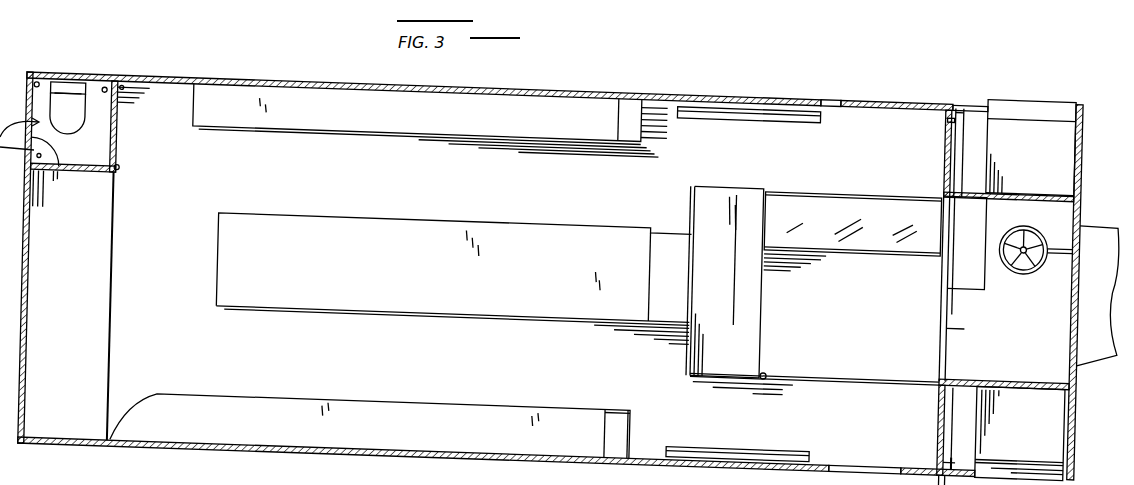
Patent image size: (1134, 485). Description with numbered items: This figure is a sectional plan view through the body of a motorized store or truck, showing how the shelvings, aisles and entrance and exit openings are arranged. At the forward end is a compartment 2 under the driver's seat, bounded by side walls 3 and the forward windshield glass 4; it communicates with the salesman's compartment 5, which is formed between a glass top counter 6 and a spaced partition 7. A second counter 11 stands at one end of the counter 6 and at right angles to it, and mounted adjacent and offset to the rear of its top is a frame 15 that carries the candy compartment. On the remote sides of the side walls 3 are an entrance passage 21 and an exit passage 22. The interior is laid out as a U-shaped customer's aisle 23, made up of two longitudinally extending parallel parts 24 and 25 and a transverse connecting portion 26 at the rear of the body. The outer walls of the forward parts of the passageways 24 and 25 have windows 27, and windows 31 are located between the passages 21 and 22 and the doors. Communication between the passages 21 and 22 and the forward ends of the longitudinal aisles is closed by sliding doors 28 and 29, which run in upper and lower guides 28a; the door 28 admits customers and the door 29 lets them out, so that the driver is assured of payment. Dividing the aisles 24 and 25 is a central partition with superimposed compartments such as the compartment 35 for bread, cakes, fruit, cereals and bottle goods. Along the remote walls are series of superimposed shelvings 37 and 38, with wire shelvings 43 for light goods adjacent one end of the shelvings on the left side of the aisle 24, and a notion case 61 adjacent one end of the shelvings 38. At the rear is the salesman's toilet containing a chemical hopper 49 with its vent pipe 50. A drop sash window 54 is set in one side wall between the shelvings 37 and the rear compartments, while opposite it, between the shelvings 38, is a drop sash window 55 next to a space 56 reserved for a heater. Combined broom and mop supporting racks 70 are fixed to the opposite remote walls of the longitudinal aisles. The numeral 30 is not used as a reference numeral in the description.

The compartment 2 is at (1036, 270).
The side walls 3 is at (1040, 206).
The forward windshield glass 4 is at (1078, 310).
The salesman's compartment 5 is at (851, 289).
The glass top counter 6 is at (826, 210).
The partition 7 is at (840, 378).
The second counter 11 is at (733, 316).
The frame 15 is at (672, 230).
The entrance passage 21 is at (1030, 433).
The exit passage 22 is at (1040, 130).
The U-shaped customer's aisle 23 is at (262, 362).
The longitudinally extending aisle 24 is at (439, 345).
The longitudinally extending aisle 25 is at (416, 164).
The transverse connecting portion 26 is at (167, 218).
The windows 27 is at (860, 105).
The door 28 is at (958, 118).
The upper and lower guides 28a is at (945, 122).
The door 29 is at (945, 158).
The latch 30 is at (948, 452).
The windows 31 is at (964, 106).
The compartment 35 is at (338, 300).
The super-imposed shelvings 37 is at (492, 447).
The super-imposed shelvings 38 is at (298, 120).
The wire shelvings 43 is at (622, 424).
The chemical hopper 49 is at (62, 116).
The vent pipe 50 is at (62, 74).
The drop sash window 54 is at (151, 441).
The drop sash window 55 is at (163, 78).
The space 56 is at (176, 107).
The notion case 61 is at (645, 130).
The combined broom and mop supporting racks 70 is at (724, 117).